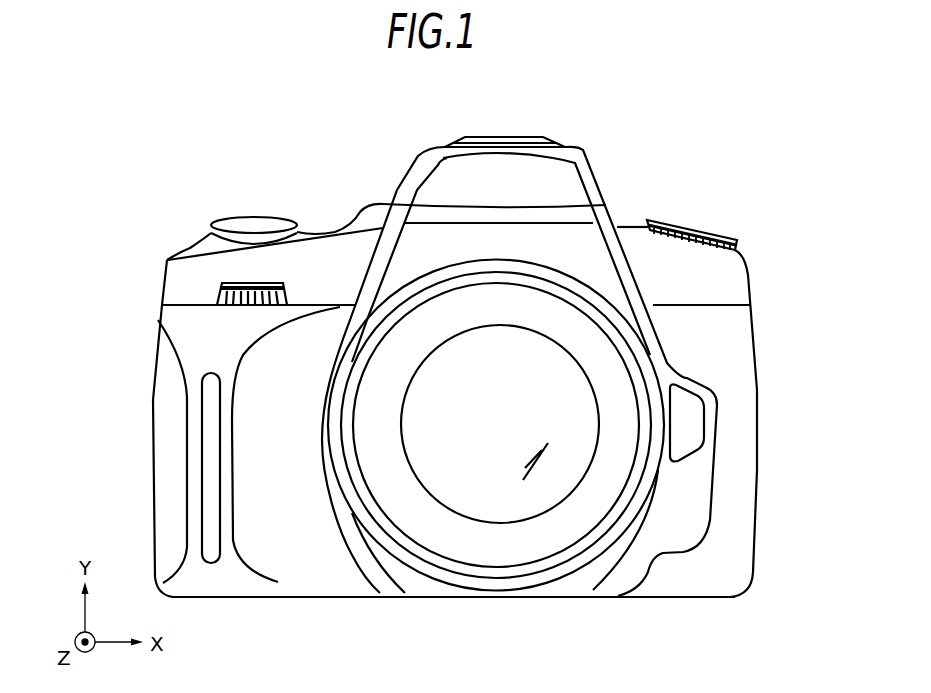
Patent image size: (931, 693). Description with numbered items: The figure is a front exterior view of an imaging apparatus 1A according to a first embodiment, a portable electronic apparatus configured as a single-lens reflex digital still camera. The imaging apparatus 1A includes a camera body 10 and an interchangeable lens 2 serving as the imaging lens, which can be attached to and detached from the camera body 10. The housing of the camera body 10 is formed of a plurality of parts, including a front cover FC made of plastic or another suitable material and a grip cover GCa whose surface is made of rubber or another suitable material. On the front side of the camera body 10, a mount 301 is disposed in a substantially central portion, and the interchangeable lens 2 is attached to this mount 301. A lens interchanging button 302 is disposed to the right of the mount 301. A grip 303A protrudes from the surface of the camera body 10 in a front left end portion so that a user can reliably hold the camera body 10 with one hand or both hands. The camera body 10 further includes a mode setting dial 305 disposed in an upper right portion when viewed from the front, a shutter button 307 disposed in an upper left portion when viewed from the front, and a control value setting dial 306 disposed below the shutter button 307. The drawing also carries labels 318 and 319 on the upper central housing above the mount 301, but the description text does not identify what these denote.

The imaging apparatus 1A is at (141, 122).
The camera body 10 is at (174, 212).
The interchangeable lens 2 is at (617, 458).
The mount 301 is at (574, 585).
The lens interchanging button 302 is at (695, 427).
The grip 303A is at (189, 457).
The mode setting dial 305 is at (692, 221).
The control value setting dial 306 is at (220, 290).
The shutter button 307 is at (250, 222).
The finder housing 318 is at (400, 156).
The accessory shoe 319 is at (501, 137).
The front cover FC is at (654, 613).
The grip cover GCa is at (276, 616).